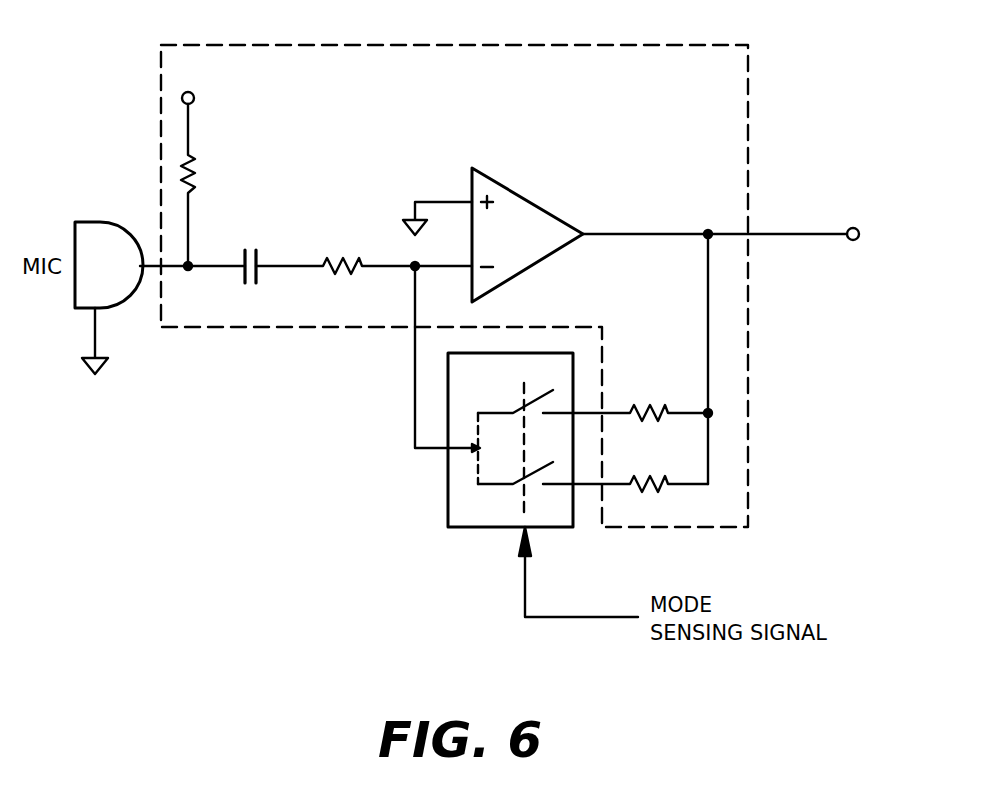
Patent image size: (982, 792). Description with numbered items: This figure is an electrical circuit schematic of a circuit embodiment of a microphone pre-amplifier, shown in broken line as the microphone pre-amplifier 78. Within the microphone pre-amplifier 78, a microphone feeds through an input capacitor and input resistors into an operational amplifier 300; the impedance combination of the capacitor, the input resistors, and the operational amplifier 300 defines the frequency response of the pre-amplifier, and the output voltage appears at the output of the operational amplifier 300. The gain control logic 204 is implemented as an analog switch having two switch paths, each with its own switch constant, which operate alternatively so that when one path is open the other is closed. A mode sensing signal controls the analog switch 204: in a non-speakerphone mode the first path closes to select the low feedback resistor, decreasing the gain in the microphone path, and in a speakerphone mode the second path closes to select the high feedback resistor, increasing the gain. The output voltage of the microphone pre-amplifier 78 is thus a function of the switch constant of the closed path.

The microphone pre-amplifier 78 is at (595, 45).
The operational amplifier 300 is at (530, 200).
The gain control logic 204 is at (448, 483).